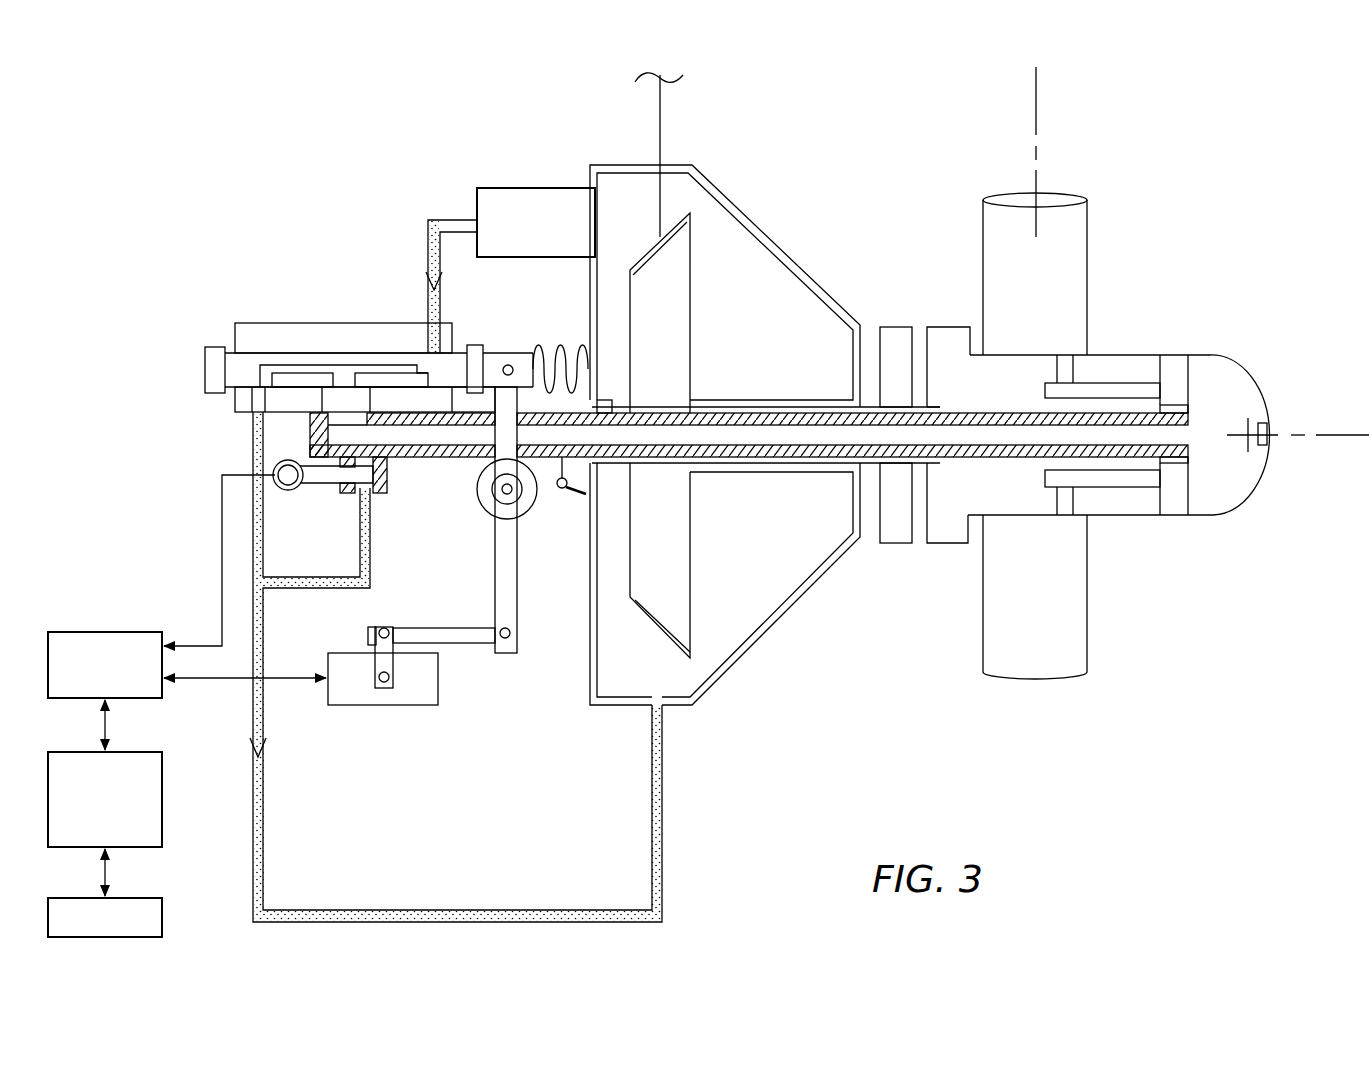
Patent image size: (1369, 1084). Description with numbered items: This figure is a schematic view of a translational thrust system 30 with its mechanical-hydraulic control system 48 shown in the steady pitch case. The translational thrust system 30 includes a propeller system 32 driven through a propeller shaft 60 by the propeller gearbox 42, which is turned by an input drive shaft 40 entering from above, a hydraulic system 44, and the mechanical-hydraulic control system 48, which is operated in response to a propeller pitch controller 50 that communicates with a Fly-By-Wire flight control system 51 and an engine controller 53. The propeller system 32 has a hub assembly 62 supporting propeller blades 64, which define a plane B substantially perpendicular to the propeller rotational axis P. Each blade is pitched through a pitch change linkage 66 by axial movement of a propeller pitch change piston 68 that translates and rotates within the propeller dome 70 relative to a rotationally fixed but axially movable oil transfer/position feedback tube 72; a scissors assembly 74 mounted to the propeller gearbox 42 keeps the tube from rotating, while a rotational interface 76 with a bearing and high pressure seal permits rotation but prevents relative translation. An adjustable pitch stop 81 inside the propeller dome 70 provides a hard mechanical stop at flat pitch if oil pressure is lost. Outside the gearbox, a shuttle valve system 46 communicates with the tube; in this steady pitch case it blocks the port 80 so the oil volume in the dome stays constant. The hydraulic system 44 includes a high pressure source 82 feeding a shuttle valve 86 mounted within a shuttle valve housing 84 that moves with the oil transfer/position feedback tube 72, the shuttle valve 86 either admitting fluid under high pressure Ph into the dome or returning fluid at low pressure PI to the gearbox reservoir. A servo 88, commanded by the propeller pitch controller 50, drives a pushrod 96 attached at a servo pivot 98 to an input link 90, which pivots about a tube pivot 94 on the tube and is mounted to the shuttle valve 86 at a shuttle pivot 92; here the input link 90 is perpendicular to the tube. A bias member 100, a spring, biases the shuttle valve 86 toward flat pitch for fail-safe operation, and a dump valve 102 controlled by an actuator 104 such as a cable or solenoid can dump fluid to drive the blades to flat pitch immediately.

The translational thrust system 30 is at (1284, 192).
The propeller system 32 is at (1255, 300).
The drive shaft 40 is at (662, 122).
The propeller gearbox 42 is at (733, 203).
The hydraulic system 44 is at (412, 172).
The shuttle valve system 46 is at (177, 322).
The mechanical-hydraulic control system 48 is at (490, 712).
The propeller pitch controller 50 is at (150, 630).
The Fly-By-Wire flight control system 51 is at (160, 794).
The engine controller 53 is at (160, 909).
The propeller shaft 60 is at (752, 472).
The hub assembly 62 is at (958, 565).
The propeller blades 64 is at (1052, 287).
The pitch change linkage 66 is at (1045, 388).
The propeller pitch change piston 68 is at (1177, 505).
The propeller dome 70 is at (1123, 353).
The oil transfer/position feedback tube 72 is at (960, 412).
The scissors assembly 74 is at (564, 490).
The rotational interface 76 is at (608, 398).
The port 80 is at (310, 441).
The pitch stop 81 is at (1262, 400).
The high pressure source 82 is at (545, 232).
The shuttle valve housing 84 is at (302, 327).
The shuttle valve 86 is at (205, 376).
The servo 88 is at (410, 706).
The input link 90 is at (517, 590).
The shuttle pivot 92 is at (508, 363).
The tube pivot 94 is at (500, 489).
The pushrod 96 is at (446, 627).
The servo pivot 98 is at (505, 640).
The bias member 100 is at (560, 350).
The dump valve 102 is at (378, 497).
The actuator 104 is at (290, 483).
The high pressure Ph is at (427, 236).
The low pressure PI is at (265, 841).
The plane B is at (1036, 105).
The propeller rotational axis P is at (1332, 437).